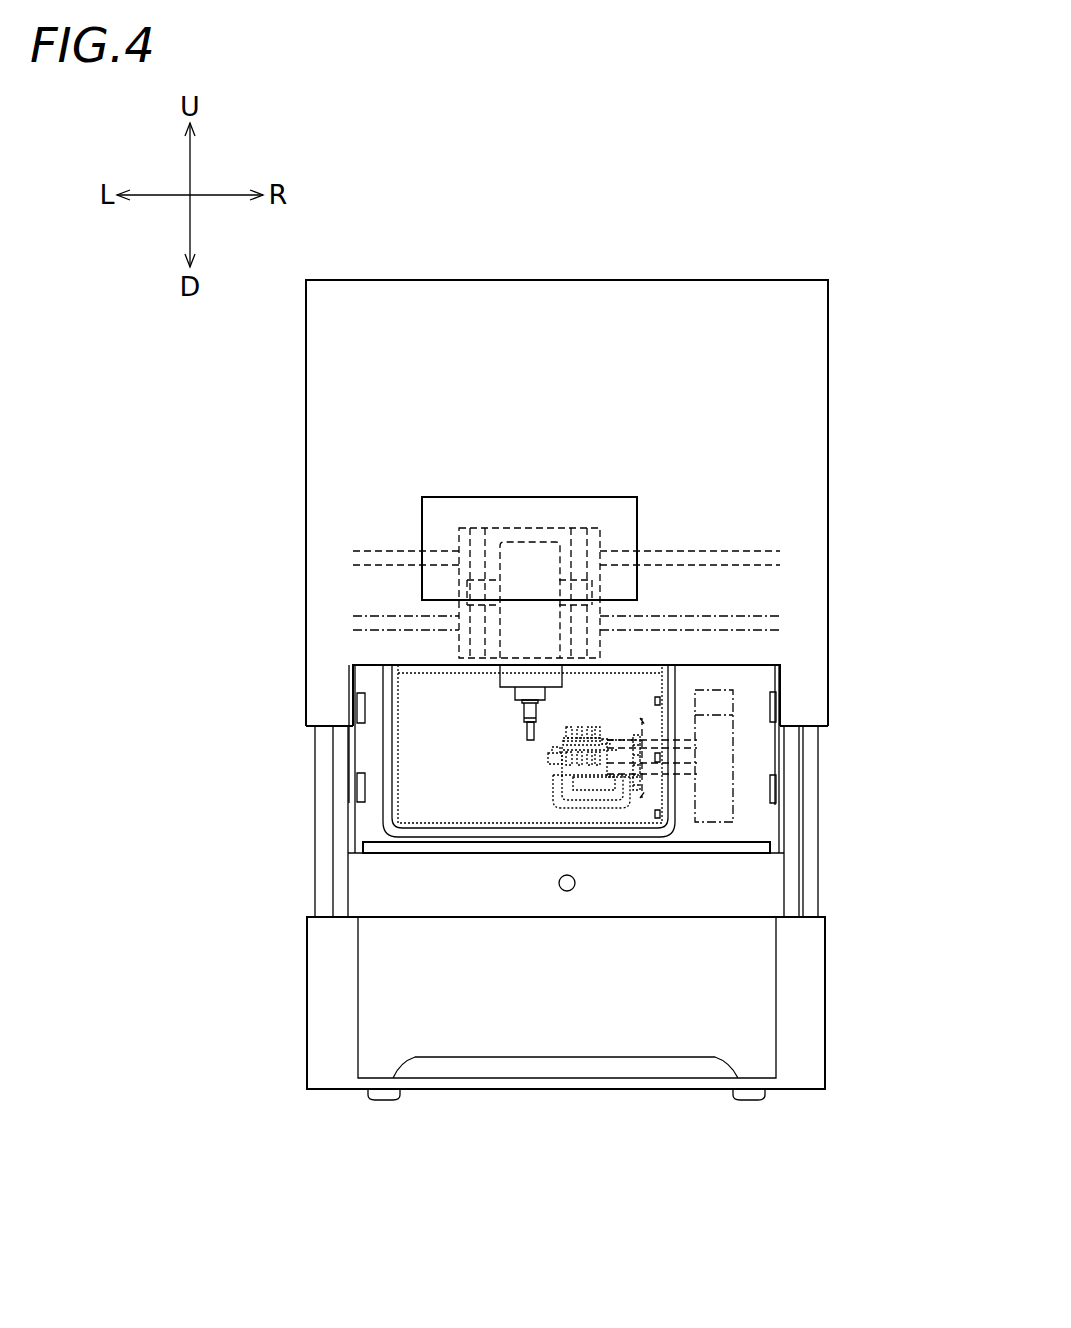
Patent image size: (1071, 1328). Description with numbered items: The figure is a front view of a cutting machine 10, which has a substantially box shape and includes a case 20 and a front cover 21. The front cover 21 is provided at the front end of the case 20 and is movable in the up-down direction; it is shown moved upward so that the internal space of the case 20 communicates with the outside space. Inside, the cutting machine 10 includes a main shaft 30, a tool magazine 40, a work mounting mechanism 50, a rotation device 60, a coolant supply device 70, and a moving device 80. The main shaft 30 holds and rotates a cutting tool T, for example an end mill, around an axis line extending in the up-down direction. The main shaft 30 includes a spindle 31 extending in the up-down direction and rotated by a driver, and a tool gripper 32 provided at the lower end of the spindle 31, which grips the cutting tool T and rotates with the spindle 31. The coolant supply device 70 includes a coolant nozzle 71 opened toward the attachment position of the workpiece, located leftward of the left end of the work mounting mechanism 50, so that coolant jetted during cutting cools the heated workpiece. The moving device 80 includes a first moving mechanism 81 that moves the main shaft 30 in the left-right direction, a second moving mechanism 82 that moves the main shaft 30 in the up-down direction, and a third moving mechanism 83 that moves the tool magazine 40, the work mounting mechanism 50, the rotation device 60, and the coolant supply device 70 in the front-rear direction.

The cutting machine 10 is at (772, 219).
The case 20 is at (838, 980).
The front cover 21 is at (828, 352).
The main shaft 30 is at (492, 690).
The spindle 31 is at (513, 692).
The tool gripper 32 is at (520, 710).
The cutting tool T is at (527, 725).
The tool magazine 40 is at (590, 758).
The work mounting mechanism 50 is at (535, 777).
The rotation device 60 is at (717, 837).
The coolant supply device 70 is at (622, 822).
The coolant nozzle 71 is at (553, 788).
The moving device 80 is at (620, 524).
The first moving mechanism 81 is at (388, 547).
The second moving mechanism 82 is at (484, 522).
The third moving mechanism 83 is at (740, 777).